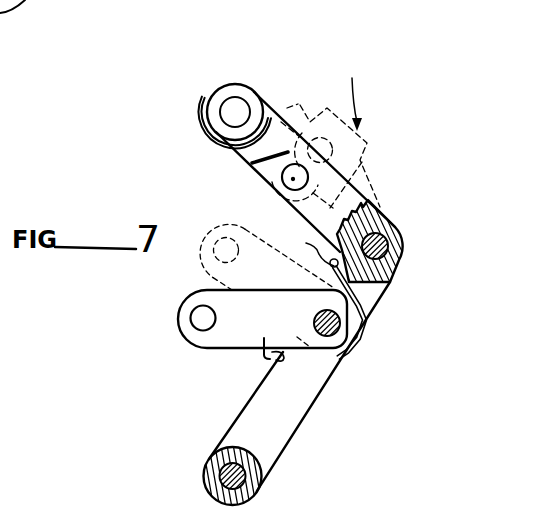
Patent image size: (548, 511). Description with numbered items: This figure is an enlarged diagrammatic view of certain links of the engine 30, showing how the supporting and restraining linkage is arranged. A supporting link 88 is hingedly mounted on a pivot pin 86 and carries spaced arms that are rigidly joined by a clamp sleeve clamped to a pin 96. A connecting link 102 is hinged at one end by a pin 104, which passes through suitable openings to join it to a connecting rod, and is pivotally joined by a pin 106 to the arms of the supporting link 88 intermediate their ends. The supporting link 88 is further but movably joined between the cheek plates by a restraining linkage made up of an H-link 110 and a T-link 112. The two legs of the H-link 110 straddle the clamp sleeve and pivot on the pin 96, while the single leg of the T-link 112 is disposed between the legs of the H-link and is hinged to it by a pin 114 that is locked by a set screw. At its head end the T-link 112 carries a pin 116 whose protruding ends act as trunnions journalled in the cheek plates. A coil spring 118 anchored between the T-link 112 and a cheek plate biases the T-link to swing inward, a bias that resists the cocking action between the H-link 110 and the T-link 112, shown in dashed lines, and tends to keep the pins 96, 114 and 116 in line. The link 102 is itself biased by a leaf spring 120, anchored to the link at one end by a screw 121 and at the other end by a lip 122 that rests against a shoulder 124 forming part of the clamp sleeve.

The apparatus 30 is at (0, 46).
The pivot pin 86 is at (242, 480).
The supporting link 88 is at (320, 397).
The pin 96 is at (380, 241).
The connecting link 102 is at (227, 347).
The pin 104 is at (200, 319).
The pin 106 is at (335, 323).
The H-link 110 is at (343, 173).
The T-link 112 is at (270, 123).
The pin 114 is at (293, 179).
The pin 116 is at (235, 110).
The coil spring 118 is at (208, 130).
The leaf spring 120 is at (339, 356).
The screw 121 is at (280, 360).
The lip 122 is at (303, 250).
The shoulder 124 is at (275, 207).